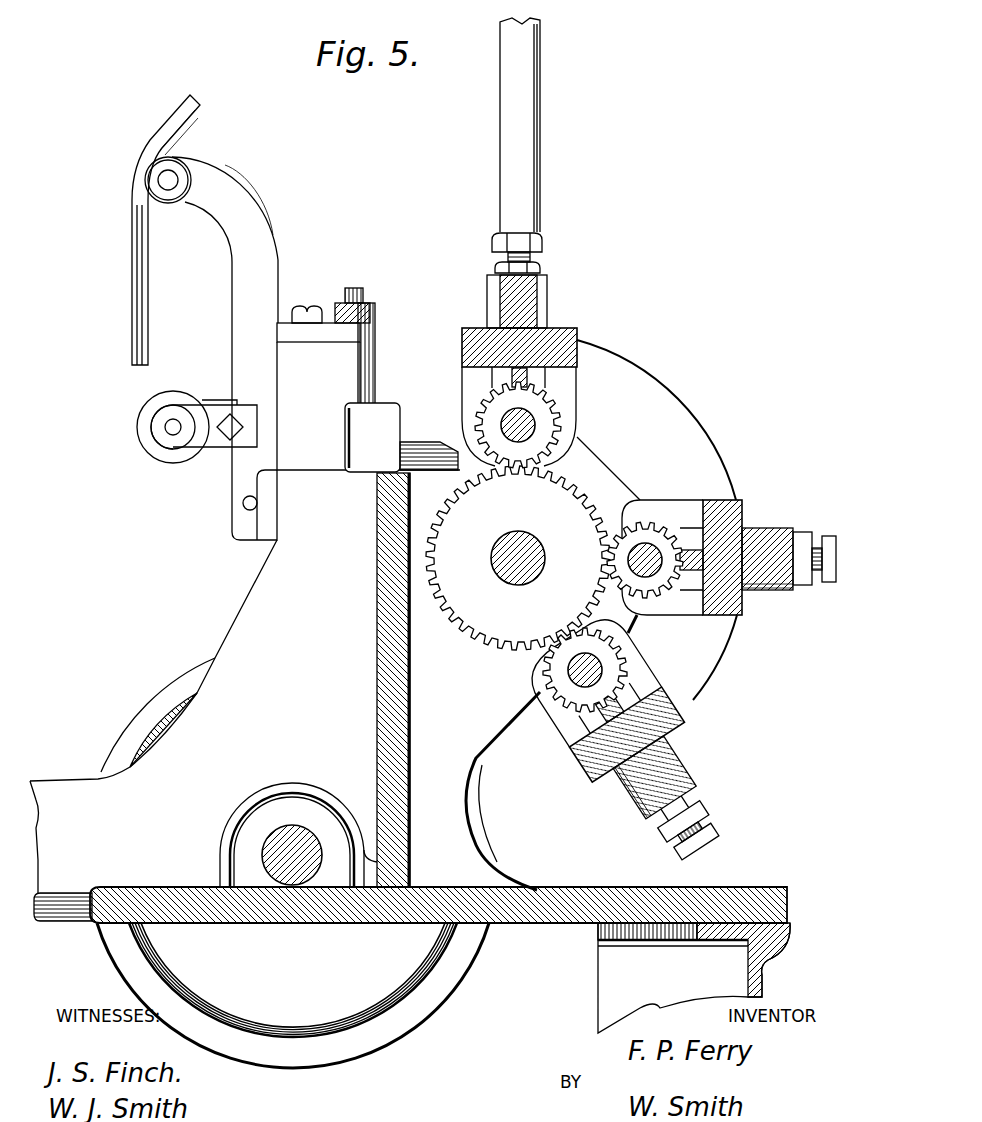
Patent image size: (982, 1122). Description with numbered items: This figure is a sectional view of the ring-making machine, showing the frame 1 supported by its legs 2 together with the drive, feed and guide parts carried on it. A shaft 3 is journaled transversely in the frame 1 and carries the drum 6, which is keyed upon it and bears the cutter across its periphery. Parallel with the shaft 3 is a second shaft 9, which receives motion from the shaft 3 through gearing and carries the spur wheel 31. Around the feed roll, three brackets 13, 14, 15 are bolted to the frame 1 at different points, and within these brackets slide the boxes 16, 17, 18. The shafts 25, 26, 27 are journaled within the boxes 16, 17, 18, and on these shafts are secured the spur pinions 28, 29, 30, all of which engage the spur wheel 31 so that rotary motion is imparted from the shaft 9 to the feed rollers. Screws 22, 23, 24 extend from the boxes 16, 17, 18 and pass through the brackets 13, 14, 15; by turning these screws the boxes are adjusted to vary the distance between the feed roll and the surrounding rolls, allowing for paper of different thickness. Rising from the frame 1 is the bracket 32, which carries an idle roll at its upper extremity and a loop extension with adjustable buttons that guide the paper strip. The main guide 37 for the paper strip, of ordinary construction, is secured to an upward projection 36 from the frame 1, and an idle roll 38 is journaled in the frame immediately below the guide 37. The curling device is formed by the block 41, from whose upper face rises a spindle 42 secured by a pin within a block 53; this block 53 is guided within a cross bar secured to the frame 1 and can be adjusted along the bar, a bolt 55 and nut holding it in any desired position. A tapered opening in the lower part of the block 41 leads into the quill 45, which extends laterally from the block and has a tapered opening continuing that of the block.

The frame 1 is at (730, 672).
The legs 2 is at (617, 965).
The shaft 3 is at (263, 847).
The drum 6 is at (170, 690).
The shaft 9 is at (540, 568).
The bracket 13 is at (662, 728).
The bracket 14 is at (736, 605).
The bracket 15 is at (530, 326).
The box 16 is at (590, 719).
The box 17 is at (705, 617).
The box 18 is at (546, 395).
The screw 22 is at (694, 818).
The screw 23 is at (813, 546).
The screw 24 is at (543, 250).
The shaft 25 is at (600, 664).
The shaft 26 is at (645, 552).
The shaft 27 is at (536, 428).
The spur pinion 28 is at (571, 691).
The spur pinion 29 is at (664, 531).
The spur pinion 30 is at (546, 414).
The spur wheel 31 is at (480, 620).
The bracket 32 is at (522, 151).
The upward projection 36 is at (237, 263).
The main guide 37 is at (135, 231).
The idle roll 38 is at (137, 428).
The block 41 is at (382, 412).
The spindle 42 is at (360, 296).
The quill 45 is at (415, 455).
The block 53 is at (378, 312).
The bolt 55 is at (308, 305).